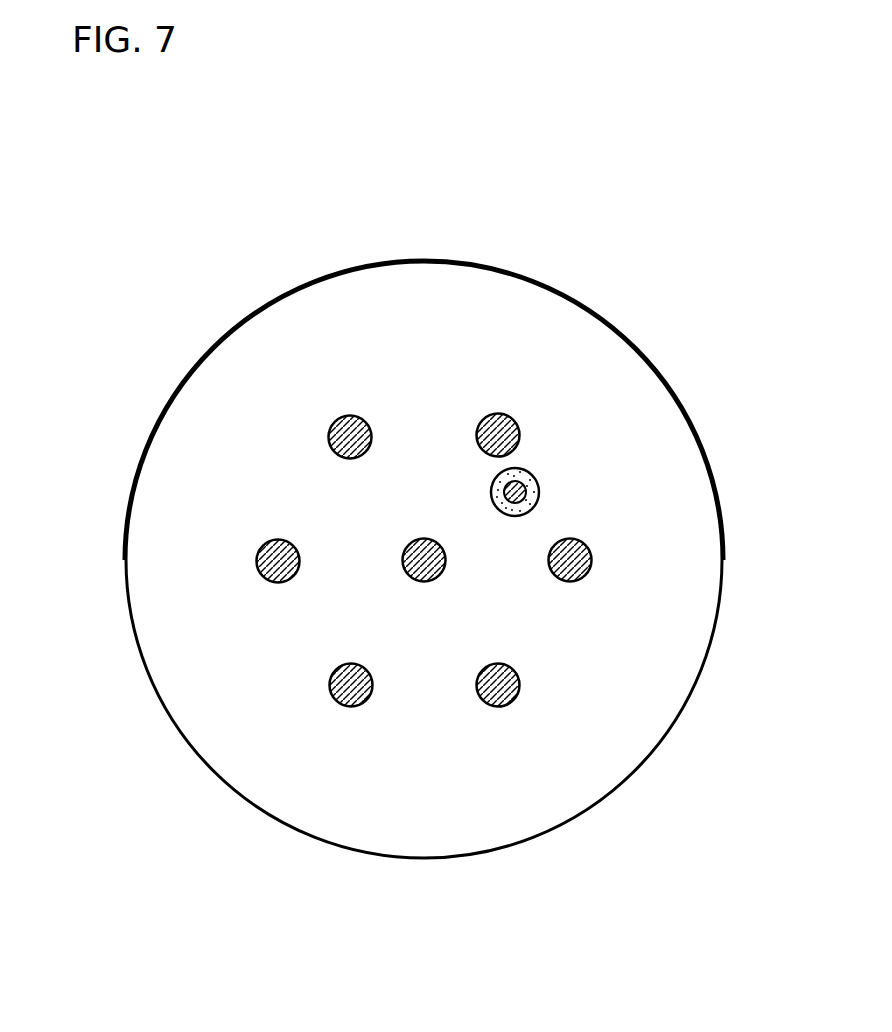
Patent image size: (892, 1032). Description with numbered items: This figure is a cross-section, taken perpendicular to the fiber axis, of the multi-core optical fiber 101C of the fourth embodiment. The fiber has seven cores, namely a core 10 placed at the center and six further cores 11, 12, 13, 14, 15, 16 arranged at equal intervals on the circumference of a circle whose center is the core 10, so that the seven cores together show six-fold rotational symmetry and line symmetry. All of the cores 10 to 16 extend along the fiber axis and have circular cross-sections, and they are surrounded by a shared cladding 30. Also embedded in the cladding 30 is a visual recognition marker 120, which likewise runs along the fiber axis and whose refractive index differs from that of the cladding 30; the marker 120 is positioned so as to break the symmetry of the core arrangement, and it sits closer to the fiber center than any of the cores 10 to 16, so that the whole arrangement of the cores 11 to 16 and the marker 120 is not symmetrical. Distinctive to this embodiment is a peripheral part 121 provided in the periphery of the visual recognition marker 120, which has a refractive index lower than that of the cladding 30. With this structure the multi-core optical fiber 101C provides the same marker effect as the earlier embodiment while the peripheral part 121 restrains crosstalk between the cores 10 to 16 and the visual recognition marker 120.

The multi-core optical fiber 101C is at (632, 220).
The shared cladding 30 is at (608, 355).
The core 10 is at (446, 562).
The core 11 is at (592, 557).
The core 12 is at (513, 700).
The core 13 is at (336, 700).
The core 14 is at (257, 560).
The core 15 is at (330, 433).
The core 16 is at (513, 420).
The visual recognition marker 120 is at (540, 500).
The peripheral part 121 is at (537, 478).